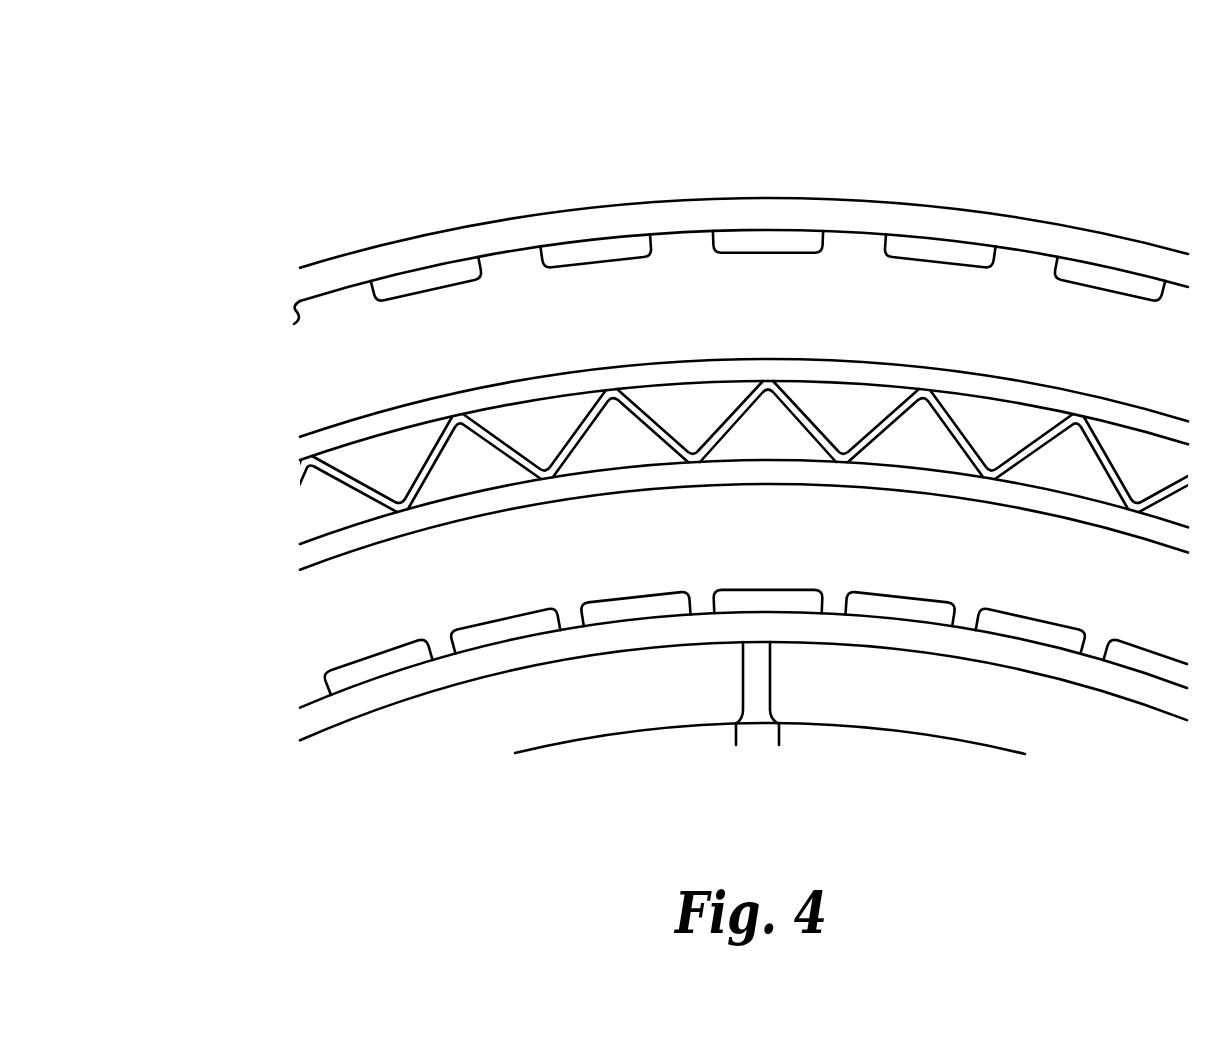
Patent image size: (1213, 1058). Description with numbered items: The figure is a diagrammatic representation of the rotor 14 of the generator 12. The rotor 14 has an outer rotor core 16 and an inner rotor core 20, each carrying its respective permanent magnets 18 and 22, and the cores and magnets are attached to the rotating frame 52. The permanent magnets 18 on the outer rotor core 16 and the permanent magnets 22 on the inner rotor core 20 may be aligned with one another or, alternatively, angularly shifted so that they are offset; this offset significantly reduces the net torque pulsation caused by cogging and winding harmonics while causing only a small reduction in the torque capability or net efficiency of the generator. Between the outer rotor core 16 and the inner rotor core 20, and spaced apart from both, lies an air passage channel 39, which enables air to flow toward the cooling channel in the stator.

The structure assembly 12 is at (1052, 88).
The rotor 14 is at (280, 284).
The outer rotor core 16 is at (422, 246).
The permanent magnets 18 is at (905, 244).
The inner rotor core 20 is at (430, 670).
The permanent magnets 22 is at (803, 603).
The air passage channel 39 is at (975, 380).
The rotating frame 52 is at (1062, 590).